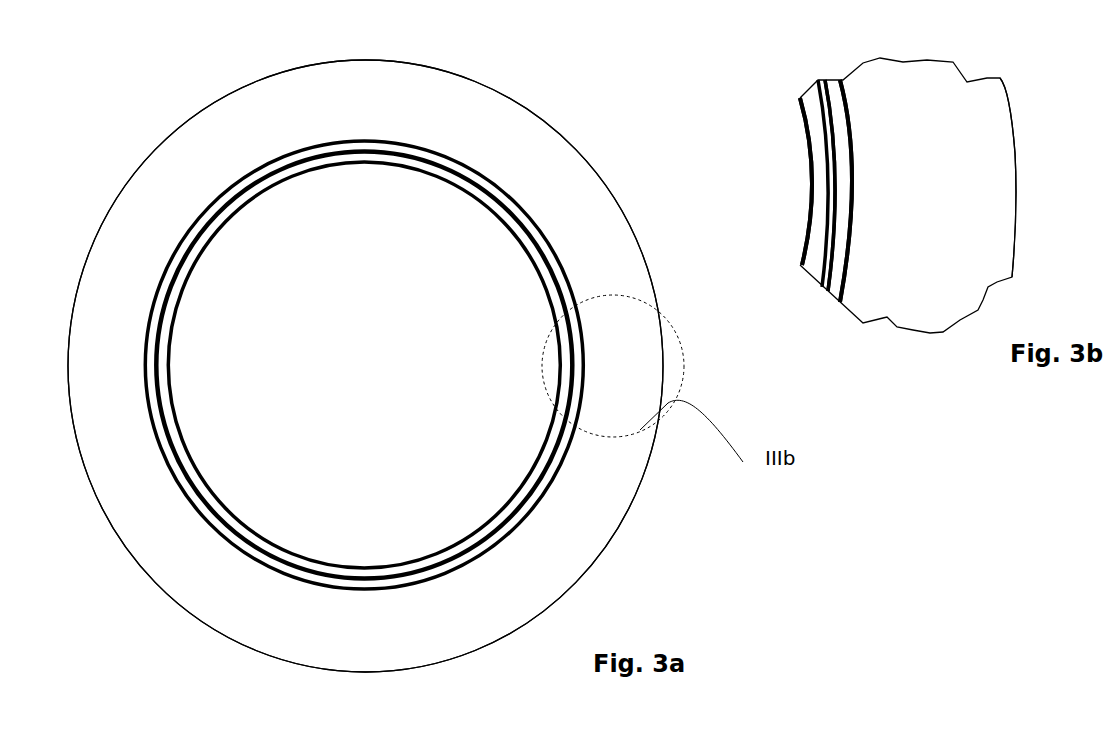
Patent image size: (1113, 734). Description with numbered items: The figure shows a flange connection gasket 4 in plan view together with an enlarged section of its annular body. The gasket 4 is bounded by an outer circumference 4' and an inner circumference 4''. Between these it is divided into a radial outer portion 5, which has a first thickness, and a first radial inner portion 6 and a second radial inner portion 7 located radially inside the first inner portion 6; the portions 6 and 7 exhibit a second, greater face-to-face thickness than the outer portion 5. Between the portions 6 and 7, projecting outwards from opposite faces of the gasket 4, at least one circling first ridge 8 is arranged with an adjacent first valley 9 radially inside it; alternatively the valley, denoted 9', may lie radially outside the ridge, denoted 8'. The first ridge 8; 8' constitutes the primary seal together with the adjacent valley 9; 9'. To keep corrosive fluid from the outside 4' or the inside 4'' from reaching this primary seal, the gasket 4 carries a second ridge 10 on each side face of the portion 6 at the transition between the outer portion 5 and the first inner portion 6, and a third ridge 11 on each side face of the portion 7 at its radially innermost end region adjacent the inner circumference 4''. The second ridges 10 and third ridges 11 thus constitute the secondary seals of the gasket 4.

In FIG. 3A, the gasket 4 is at (373, 366).
In FIG. 3B, the gasket 4 is at (930, 180).
In FIG. 3A, the outer circumference 4' is at (365, 350).
In FIG. 3B, the outer circumference 4' is at (1044, 177).
In FIG. 3A, the inner circumference 4'' is at (364, 365).
In FIG. 3B, the inner circumference 4'' is at (763, 181).
In FIG. 3A, the radial outer portion 5 is at (657, 377).
In FIG. 3B, the radial outer portion 5 is at (1007, 230).
In FIG. 3B, the first radial inner portion 6 is at (803, 263).
In FIG. 3B, the second radial inner portion 7 is at (818, 203).
In FIG. 3B, the first ridge 8 is at (822, 155).
In FIG. 3B, the first ridge 8' is at (826, 168).
In FIG. 3B, the first valley 9 is at (797, 167).
In FIG. 3B, the first valley 9' is at (816, 177).
In FIG. 3B, the second ridge 10 is at (842, 303).
In FIG. 3B, the third ridge 11 is at (803, 97).